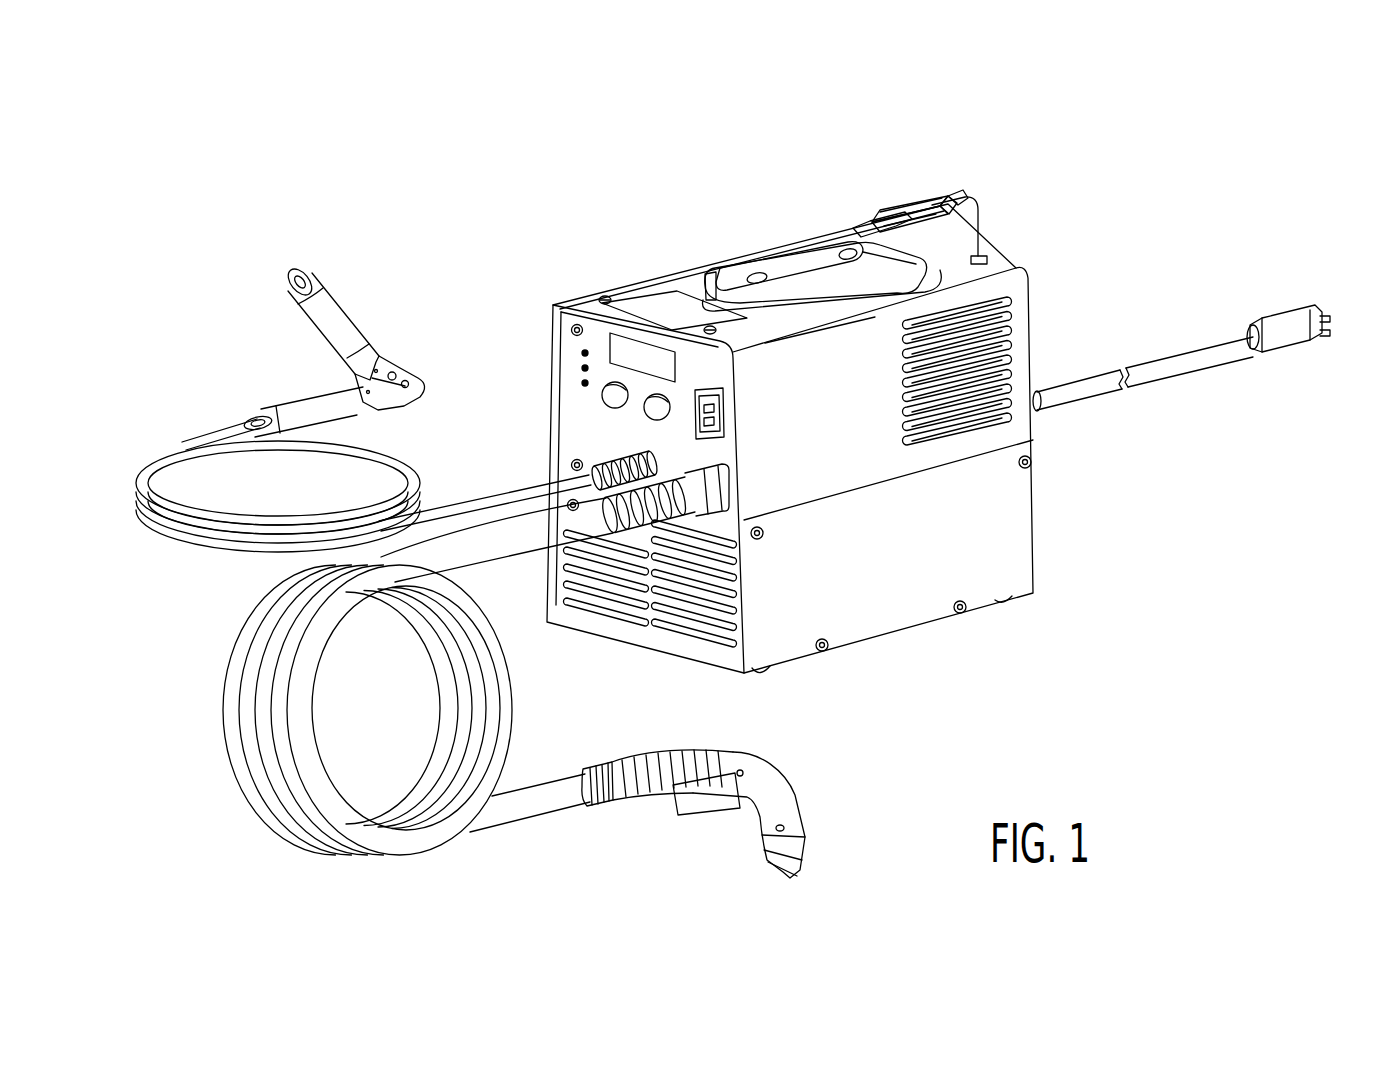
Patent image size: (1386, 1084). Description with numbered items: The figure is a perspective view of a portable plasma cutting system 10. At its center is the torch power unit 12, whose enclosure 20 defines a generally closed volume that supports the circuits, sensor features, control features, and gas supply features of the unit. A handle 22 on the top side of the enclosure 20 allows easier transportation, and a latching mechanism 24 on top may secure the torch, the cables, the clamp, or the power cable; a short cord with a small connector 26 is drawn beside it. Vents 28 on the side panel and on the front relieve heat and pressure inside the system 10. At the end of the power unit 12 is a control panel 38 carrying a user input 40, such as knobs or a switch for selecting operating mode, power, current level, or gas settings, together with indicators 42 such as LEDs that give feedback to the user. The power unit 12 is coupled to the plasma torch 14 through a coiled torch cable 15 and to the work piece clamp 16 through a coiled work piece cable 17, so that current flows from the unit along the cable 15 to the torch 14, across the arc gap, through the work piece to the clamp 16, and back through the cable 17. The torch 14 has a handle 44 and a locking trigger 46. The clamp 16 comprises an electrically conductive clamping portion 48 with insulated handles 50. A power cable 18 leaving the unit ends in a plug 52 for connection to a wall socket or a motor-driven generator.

The plasma cutting system 10 is at (904, 130).
The torch power unit 12 is at (1050, 259).
The plasma torch 14 is at (802, 753).
The torch cable 15 is at (502, 692).
The work piece clamp 16 is at (397, 304).
The work piece cable 17 is at (413, 470).
The power cable 18 is at (1157, 373).
The enclosure 20 is at (673, 269).
The handle 22 is at (790, 297).
The latching mechanism 24 is at (936, 194).
The cord connector 26 is at (965, 262).
The vents 28 is at (1005, 358).
The control panel 38 is at (578, 410).
The user input 40 is at (655, 408).
The indicators 42 is at (588, 333).
The handle 44 is at (627, 758).
The locking trigger 46 is at (703, 807).
The clamping portion 48 is at (403, 375).
The insulated handles 50 is at (328, 293).
The plug 52 is at (1296, 348).